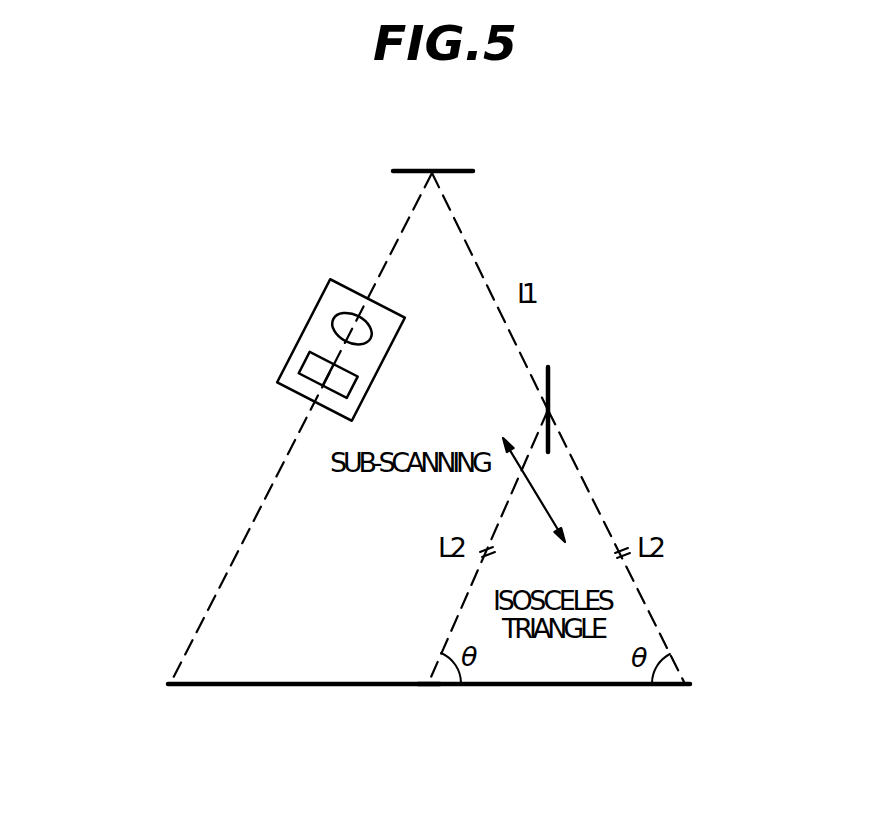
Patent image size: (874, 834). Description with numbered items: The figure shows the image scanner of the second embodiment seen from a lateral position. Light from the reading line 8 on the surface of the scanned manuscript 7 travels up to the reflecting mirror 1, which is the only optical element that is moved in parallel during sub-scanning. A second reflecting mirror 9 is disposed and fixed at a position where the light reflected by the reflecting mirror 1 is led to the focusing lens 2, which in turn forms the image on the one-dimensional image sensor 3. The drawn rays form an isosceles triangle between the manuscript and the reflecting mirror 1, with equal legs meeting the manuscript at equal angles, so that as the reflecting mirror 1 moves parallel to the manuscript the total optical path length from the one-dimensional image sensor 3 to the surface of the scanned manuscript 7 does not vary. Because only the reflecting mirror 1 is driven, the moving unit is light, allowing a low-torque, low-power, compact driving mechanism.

The reflecting mirror 1 is at (552, 380).
The focusing lens 2 is at (337, 322).
The one-dimensional image sensor 3 is at (307, 373).
The scanned manuscript 7 is at (223, 684).
The reading line 8 is at (423, 686).
The second reflecting mirror 9 is at (452, 170).